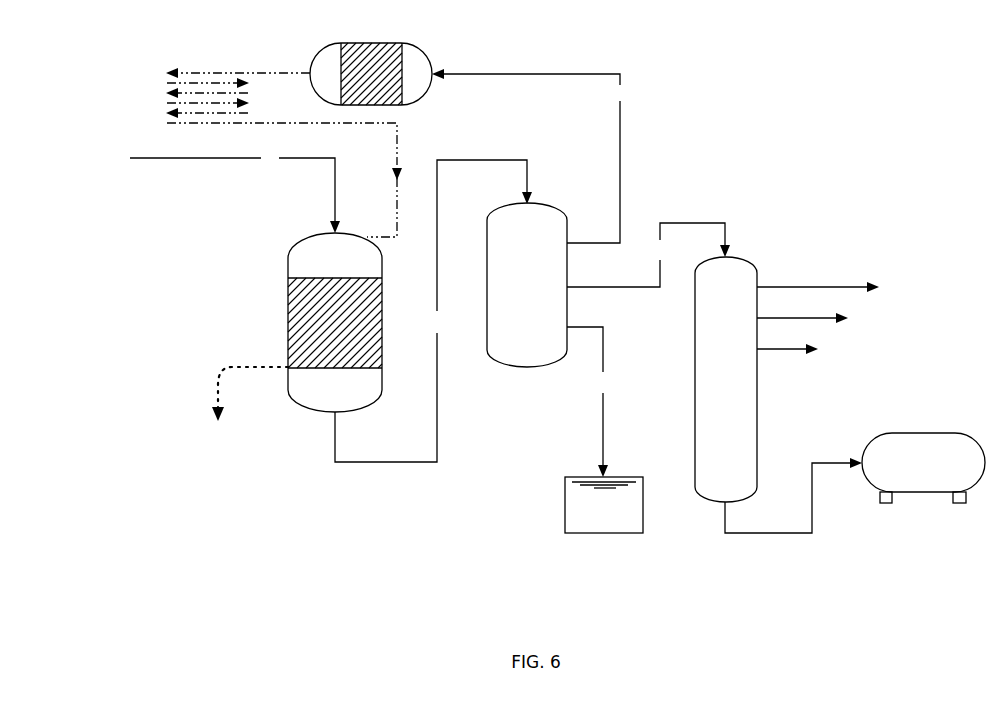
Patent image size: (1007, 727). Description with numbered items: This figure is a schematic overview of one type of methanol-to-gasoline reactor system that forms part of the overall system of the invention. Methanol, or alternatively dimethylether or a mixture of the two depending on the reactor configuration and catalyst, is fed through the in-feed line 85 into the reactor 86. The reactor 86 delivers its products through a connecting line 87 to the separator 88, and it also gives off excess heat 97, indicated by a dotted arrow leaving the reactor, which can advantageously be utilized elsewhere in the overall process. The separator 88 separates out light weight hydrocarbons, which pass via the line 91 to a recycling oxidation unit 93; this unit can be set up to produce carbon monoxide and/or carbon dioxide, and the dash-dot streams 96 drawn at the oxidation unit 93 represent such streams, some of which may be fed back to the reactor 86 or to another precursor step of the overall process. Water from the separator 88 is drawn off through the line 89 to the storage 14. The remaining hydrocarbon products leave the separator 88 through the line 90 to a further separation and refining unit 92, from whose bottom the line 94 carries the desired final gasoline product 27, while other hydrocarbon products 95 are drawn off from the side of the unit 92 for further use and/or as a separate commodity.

The storage 14 is at (604, 505).
The final gasoline product 27 is at (923, 468).
The in-feed line 85 is at (235, 191).
The reactor 86 is at (335, 322).
The reactor effluent line 87 is at (433, 311).
The separator 88 is at (527, 285).
The separator bottoms line 89 is at (589, 402).
The separator overhead line 90 is at (648, 255).
The recycle line to heat exchanger 91 is at (530, 156).
The distillation column 92 is at (726, 379).
The recycling oxidation unit 93 is at (371, 74).
The column bottoms line 94 is at (793, 495).
The other hydrocarbon products 95 is at (818, 318).
The heat exchange streams 96 is at (284, 146).
The excess heat 97 is at (248, 407).